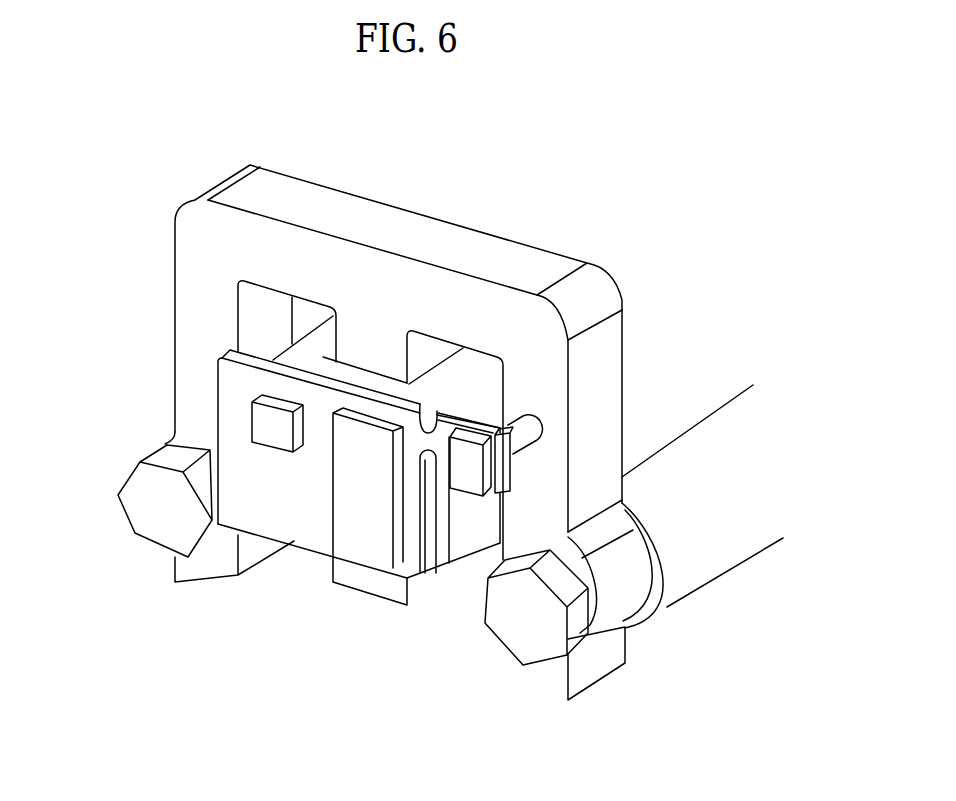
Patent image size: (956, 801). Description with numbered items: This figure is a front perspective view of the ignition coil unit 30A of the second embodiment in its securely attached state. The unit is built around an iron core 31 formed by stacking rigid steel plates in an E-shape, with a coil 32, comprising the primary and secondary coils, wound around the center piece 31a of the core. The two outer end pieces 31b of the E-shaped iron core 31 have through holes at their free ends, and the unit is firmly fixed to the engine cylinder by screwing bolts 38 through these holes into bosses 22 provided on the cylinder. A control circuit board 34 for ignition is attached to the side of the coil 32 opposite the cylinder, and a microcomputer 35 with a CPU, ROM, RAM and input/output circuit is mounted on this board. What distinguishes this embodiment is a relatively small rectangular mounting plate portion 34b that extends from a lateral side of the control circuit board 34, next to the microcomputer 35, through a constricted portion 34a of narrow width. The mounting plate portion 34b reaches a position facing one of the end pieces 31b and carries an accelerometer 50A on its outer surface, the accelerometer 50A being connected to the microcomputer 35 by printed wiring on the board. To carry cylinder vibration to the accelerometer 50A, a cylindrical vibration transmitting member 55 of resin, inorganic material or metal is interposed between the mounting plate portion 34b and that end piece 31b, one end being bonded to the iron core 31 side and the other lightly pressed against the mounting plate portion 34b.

The ignition coil unit 30A is at (414, 201).
The iron core 31 is at (473, 249).
The center piece 31a is at (385, 588).
The end pieces 31b is at (207, 305).
The coil 32 is at (354, 380).
The control circuit board 34 is at (302, 522).
The constricted portion 34a is at (430, 421).
The mounting plate portion 34b is at (487, 417).
The microcomputer 35 is at (377, 533).
The bolts 38 is at (152, 520).
The accelerometer 50A is at (468, 480).
The vibration transmitting member 55 is at (525, 438).
The bosses 22 is at (733, 550).